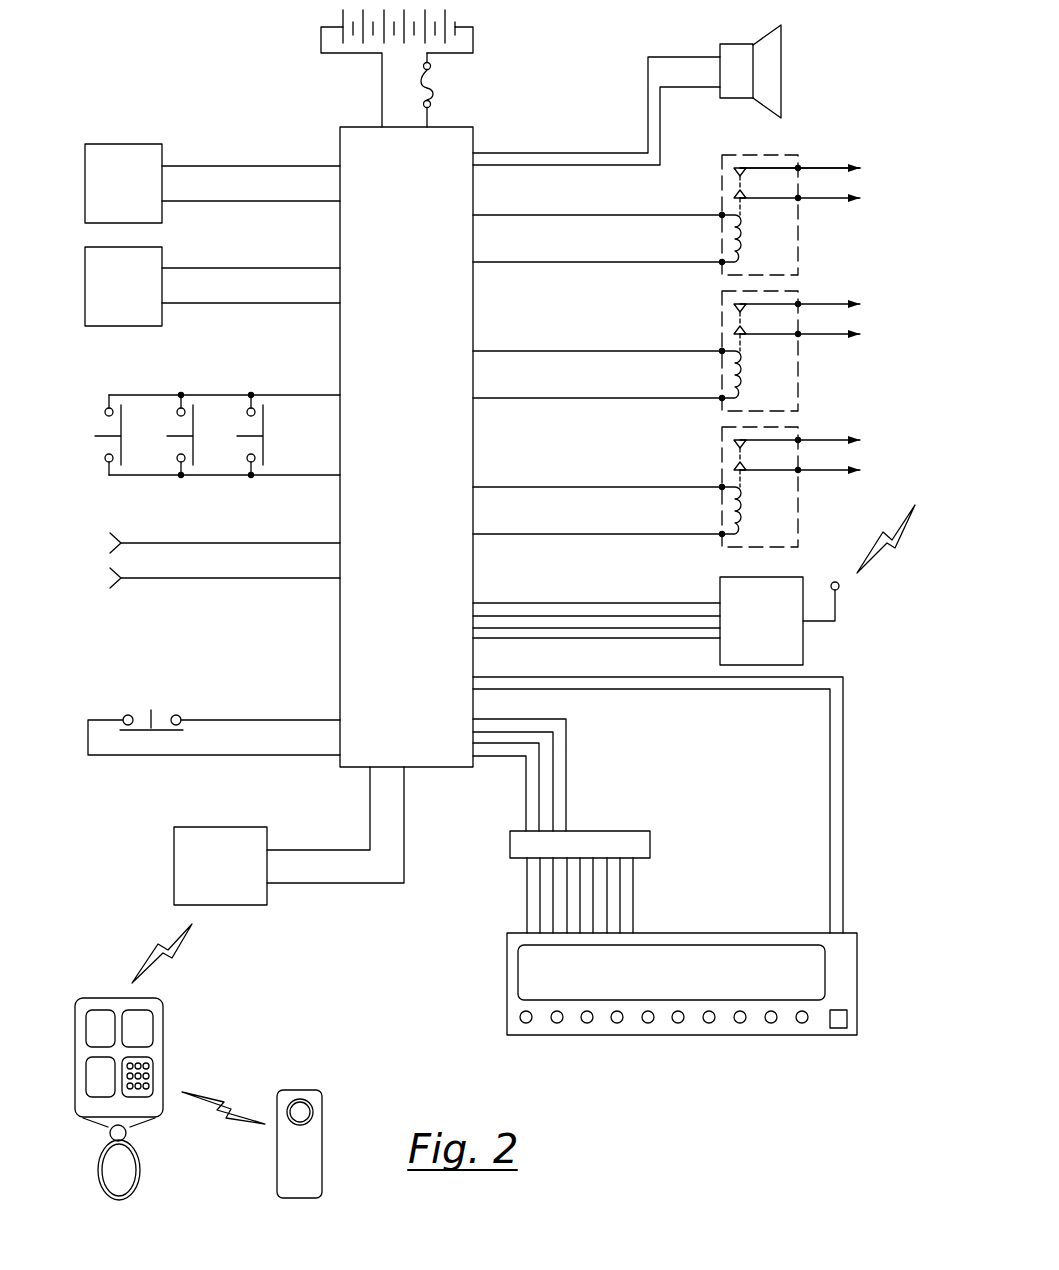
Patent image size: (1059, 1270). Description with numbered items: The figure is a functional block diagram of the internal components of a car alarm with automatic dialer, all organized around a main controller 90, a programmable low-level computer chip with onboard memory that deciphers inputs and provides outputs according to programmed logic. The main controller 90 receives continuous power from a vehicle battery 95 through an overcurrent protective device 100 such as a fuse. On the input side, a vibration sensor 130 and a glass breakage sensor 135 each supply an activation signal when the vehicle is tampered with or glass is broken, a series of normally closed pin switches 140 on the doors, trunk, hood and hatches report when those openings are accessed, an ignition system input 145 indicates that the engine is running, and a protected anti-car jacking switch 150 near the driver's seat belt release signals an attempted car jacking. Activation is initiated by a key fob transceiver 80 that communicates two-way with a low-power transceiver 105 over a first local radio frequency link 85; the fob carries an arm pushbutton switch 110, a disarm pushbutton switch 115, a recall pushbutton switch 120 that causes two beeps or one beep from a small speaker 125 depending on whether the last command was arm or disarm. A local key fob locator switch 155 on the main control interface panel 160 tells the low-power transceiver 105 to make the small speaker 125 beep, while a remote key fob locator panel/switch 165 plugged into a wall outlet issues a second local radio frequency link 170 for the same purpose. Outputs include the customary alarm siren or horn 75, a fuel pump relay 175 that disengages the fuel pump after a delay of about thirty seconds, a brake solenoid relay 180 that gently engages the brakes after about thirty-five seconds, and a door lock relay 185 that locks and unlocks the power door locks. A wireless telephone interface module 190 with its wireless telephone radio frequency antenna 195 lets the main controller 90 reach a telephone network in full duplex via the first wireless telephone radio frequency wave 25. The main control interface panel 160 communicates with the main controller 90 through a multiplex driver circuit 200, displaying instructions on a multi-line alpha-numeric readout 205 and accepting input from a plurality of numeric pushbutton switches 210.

The first wireless telephone radio frequency wave 25 is at (870, 530).
The alarm siren or horn 75 is at (785, 70).
The key fob transceiver 80 is at (120, 1086).
The first local radio frequency link 85 is at (173, 958).
The main controller 90 is at (462, 127).
The vehicle battery 95 is at (343, 22).
The overcurrent protective device 100 is at (437, 88).
The low-power transceiver 105 is at (267, 897).
The arm pushbutton switch 110 is at (90, 1012).
The disarm pushbutton switch 115 is at (143, 1027).
The recall pushbutton switch 120 is at (95, 1080).
The small speaker 125 is at (148, 1072).
The vibration sensor 130 is at (85, 160).
The glass breakage sensor 135 is at (85, 273).
The normally closed pin switches 140 is at (106, 424).
The ignition system input 145 is at (108, 553).
The anti-car jacking switch 150 is at (143, 713).
The local key fob locator switch 155 is at (840, 1028).
The main control interface panel 160 is at (655, 882).
The remote key fob locator panel/switch 165 is at (323, 1148).
The second local radio frequency link 170 is at (217, 1115).
The fuel pump relay 175 is at (720, 192).
The brake solenoid relay 180 is at (721, 320).
The door lock relay 185 is at (721, 456).
The wireless telephone interface module 190 is at (721, 577).
The wireless telephone radio frequency antenna 195 is at (838, 605).
The multiplex driver circuit 200 is at (603, 831).
The multi-line alpha-numeric readout 205 is at (705, 960).
The numeric pushbutton switches 210 is at (587, 1023).